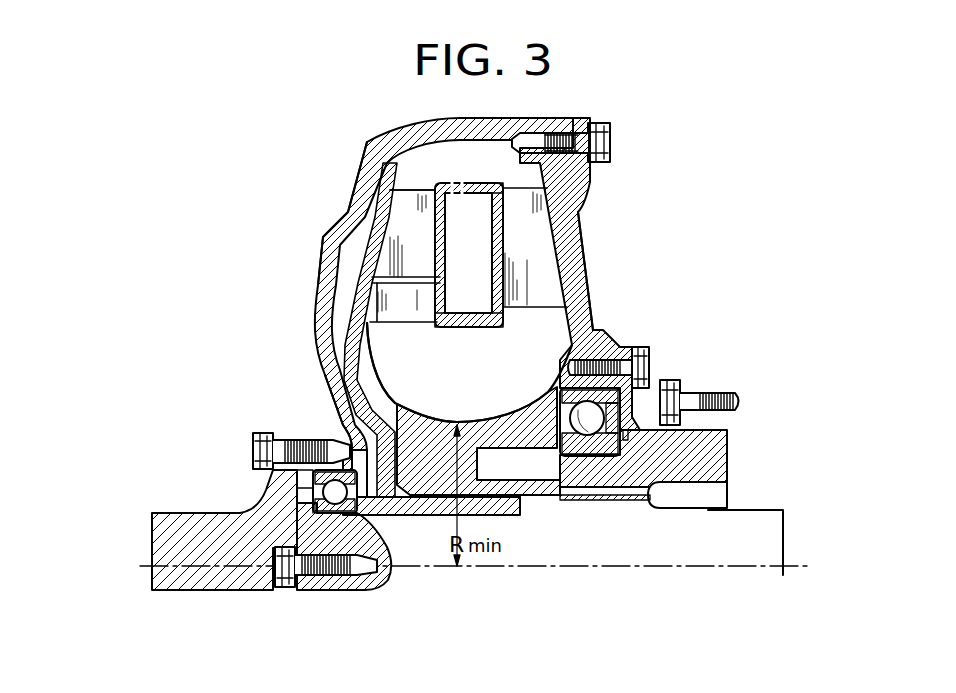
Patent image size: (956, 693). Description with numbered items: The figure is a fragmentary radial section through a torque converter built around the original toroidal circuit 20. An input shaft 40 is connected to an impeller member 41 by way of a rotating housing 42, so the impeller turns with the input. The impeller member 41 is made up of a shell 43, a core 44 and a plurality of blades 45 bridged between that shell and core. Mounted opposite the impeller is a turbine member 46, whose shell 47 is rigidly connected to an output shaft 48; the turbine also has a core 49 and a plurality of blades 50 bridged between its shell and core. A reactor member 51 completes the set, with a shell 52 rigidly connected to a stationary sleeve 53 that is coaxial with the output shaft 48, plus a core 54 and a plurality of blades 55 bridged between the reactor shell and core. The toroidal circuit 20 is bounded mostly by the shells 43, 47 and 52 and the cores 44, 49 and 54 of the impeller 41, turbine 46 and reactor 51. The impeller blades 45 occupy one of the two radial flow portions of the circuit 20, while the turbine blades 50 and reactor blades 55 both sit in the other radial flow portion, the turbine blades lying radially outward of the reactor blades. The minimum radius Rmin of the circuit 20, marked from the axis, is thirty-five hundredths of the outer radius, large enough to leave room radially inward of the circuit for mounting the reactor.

The toroidal circuit 20 is at (490, 392).
The input shaft 40 is at (218, 525).
The impeller member 41 is at (578, 218).
The rotating housing 42 is at (447, 122).
The shell 43 is at (576, 264).
The core 44 is at (474, 185).
The blades 45 is at (540, 252).
The turbine member 46 is at (420, 187).
The shell 47 is at (368, 223).
The output shaft 48 is at (757, 530).
The core 49 is at (447, 200).
The blades 50 is at (418, 243).
The reactor member 51 is at (392, 330).
The shell 52 is at (357, 358).
The stationary sleeve 53 is at (718, 452).
The core 54 is at (467, 320).
The blades 55 is at (412, 314).